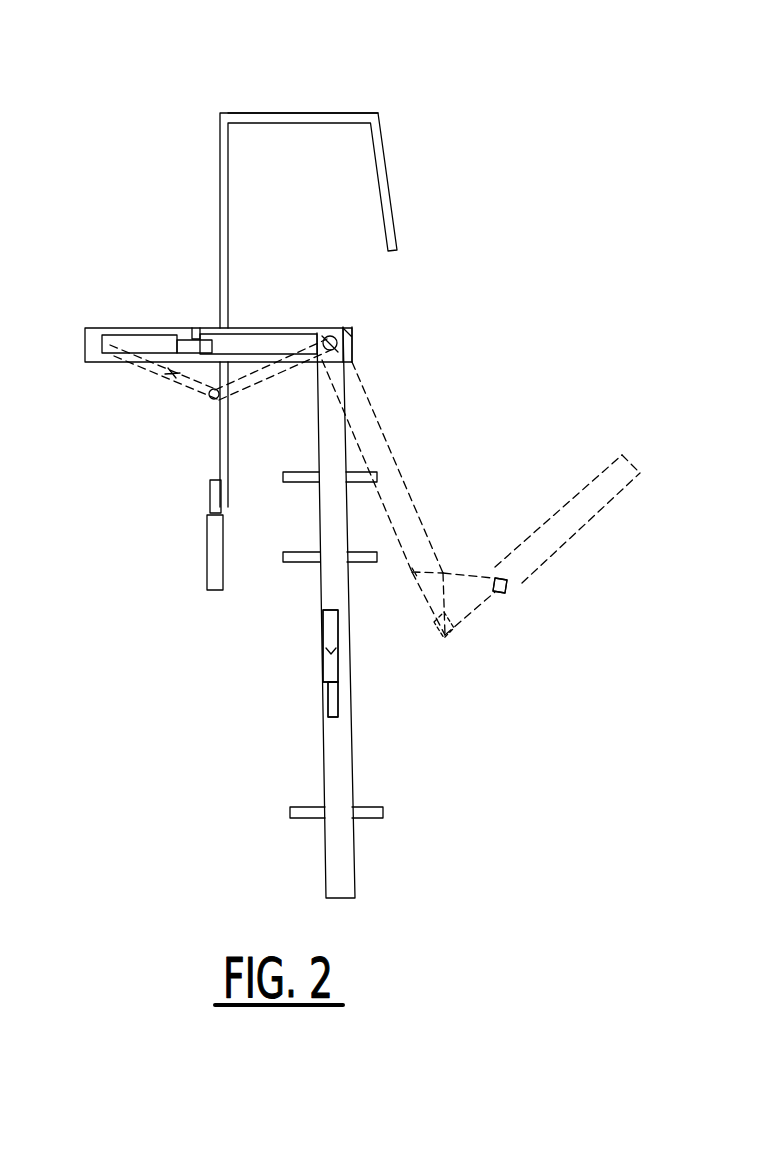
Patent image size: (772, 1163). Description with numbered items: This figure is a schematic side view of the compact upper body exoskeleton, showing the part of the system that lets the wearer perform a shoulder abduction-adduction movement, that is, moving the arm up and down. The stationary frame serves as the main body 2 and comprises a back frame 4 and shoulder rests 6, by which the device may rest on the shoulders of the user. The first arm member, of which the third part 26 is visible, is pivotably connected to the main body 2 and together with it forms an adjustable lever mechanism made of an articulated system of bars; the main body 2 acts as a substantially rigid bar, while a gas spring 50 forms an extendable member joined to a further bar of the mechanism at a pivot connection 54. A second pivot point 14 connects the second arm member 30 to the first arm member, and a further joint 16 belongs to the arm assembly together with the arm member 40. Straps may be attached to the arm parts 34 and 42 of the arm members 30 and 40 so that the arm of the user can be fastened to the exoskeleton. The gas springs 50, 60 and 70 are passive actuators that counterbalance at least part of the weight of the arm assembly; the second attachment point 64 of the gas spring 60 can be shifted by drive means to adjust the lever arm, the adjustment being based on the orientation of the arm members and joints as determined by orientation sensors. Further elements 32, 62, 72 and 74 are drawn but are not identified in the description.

The main body 2 is at (160, 100).
The back frame 4 is at (197, 196).
The shoulder rests 6 is at (280, 112).
The second pivot point 14 is at (340, 333).
The joint 16 is at (447, 640).
The third part 26 is at (196, 335).
The second arm member 30 is at (400, 415).
The lever 32 is at (264, 372).
The arm part 34 is at (400, 482).
The arm member 40 is at (587, 452).
The arm part 42 is at (328, 790).
The gas spring 50 is at (202, 553).
The second pivot connection 54 is at (222, 490).
The gas spring 60 is at (135, 325).
The slider 62 is at (115, 358).
The second attachment point 64 is at (211, 394).
The gas spring 70 is at (470, 565).
The slider element 72 is at (322, 607).
The locking element 74 is at (507, 590).